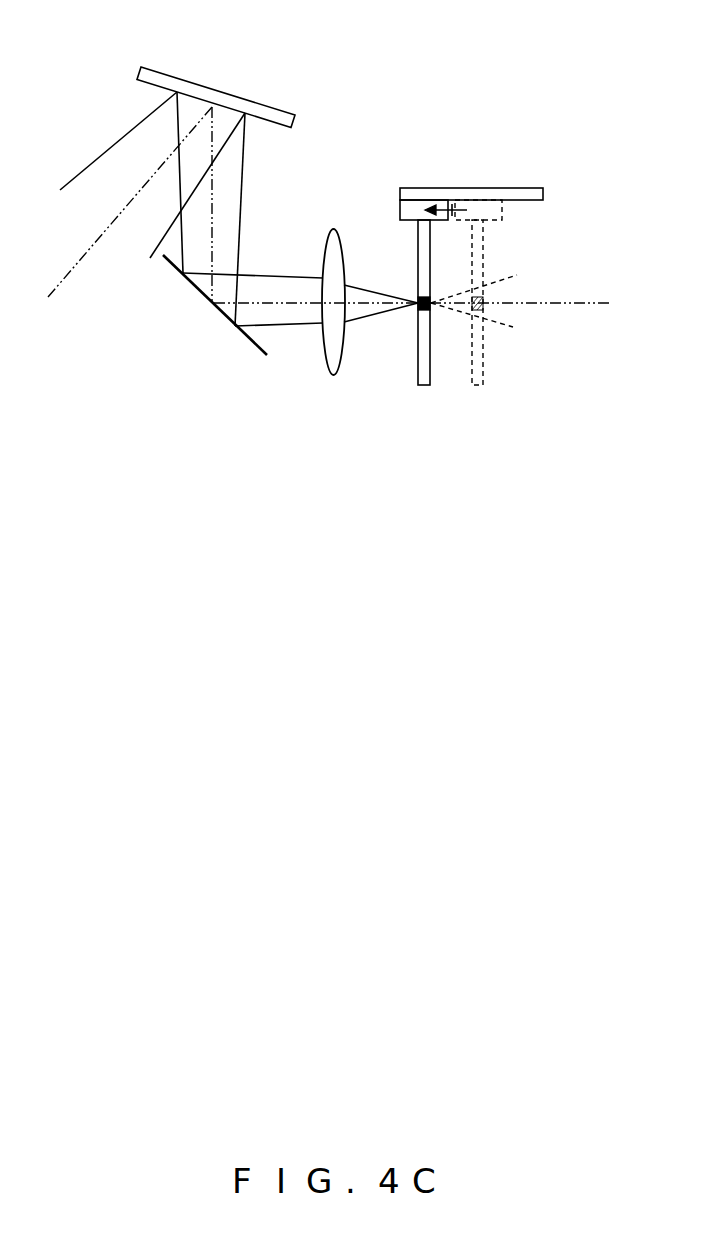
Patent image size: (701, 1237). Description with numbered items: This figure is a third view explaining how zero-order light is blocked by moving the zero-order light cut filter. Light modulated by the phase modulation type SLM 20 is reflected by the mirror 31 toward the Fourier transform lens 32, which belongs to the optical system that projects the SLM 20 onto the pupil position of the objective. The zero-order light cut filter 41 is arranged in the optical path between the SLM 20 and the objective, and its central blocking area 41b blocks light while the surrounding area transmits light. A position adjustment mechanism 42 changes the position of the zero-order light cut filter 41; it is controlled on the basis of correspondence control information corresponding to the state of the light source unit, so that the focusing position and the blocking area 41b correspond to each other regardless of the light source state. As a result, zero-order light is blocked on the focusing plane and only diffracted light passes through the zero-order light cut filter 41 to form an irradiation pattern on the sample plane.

The SLM 20 is at (172, 72).
The mirror 31 is at (212, 302).
The Fourier transform lens 32 is at (335, 228).
The 0-order light cut filter 41 is at (430, 385).
The blocking area 41b is at (417, 308).
The position adjustment mechanism 42 is at (523, 188).